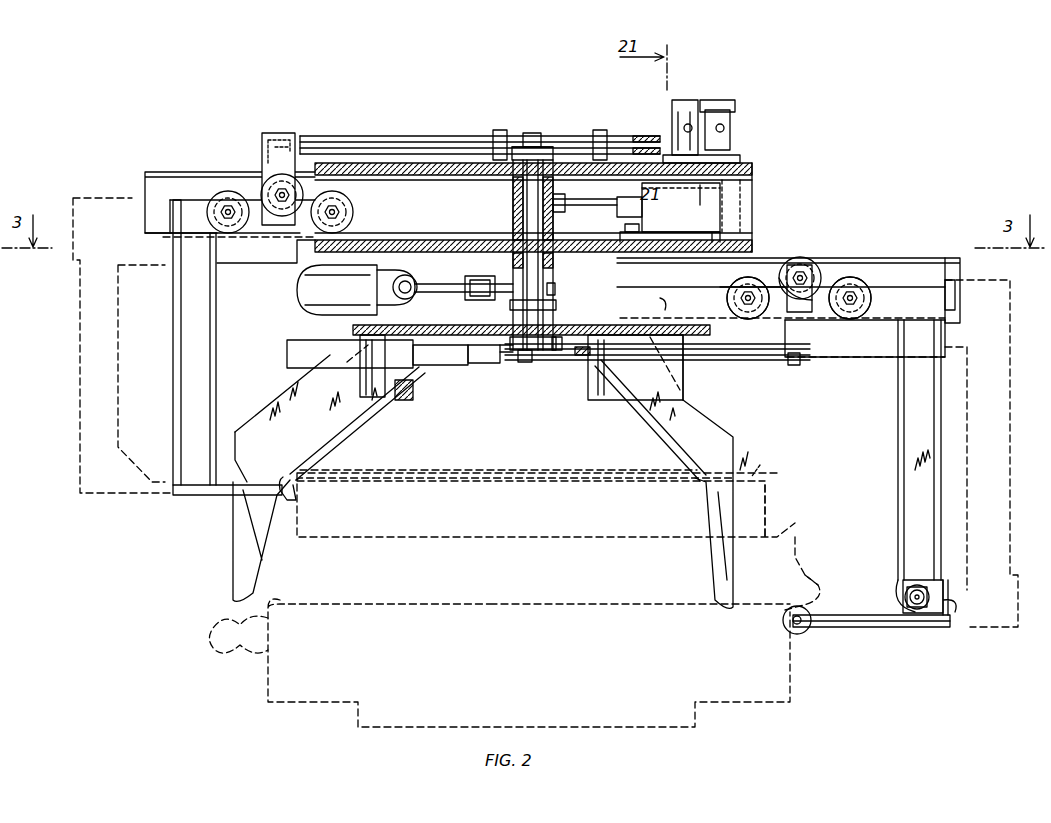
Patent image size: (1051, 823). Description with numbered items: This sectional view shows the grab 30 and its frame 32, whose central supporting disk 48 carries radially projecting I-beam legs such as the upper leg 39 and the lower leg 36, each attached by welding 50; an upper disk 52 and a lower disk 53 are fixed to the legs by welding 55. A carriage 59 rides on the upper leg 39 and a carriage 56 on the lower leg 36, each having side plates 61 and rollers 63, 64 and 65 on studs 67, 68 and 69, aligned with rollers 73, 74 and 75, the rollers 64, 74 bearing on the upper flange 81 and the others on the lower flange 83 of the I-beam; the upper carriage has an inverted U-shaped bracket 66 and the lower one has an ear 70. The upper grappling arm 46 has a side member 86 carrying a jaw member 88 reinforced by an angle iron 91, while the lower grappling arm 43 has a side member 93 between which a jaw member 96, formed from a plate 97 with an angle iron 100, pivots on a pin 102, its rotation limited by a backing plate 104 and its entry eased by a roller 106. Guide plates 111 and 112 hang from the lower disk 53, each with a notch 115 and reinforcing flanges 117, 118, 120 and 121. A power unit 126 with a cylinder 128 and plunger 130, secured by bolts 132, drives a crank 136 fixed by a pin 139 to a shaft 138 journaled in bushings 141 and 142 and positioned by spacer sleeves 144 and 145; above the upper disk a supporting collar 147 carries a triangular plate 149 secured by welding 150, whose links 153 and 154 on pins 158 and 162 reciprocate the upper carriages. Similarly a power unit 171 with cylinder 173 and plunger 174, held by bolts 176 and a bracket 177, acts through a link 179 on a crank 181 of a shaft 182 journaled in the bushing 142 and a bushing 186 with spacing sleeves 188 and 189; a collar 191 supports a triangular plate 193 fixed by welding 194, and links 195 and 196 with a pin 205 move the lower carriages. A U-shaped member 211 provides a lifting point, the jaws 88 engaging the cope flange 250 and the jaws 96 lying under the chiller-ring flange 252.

The grab 30 is at (829, 224).
The frame 32 is at (742, 153).
The leg 36 is at (938, 250).
The leg 39 is at (161, 162).
The grappling arm 43 is at (890, 419).
The grappling arm 46 is at (163, 336).
The central supporting plate or disk 48 is at (755, 238).
The welding 50 is at (300, 264).
The upper disk 52 is at (756, 168).
The lower disk 53 is at (712, 330).
The welding 55 is at (312, 136).
The carriage 56 is at (975, 297).
The carriage 59 is at (158, 222).
The side plate 61 is at (948, 335).
The roller 63 is at (730, 290).
The roller 64 is at (821, 262).
The roller 65 is at (866, 280).
The inverted U-shaped bracket 66 is at (265, 163).
The stud or bolt 67 is at (755, 282).
The stud or bolt 68 is at (800, 262).
The stud or bolt 69 is at (864, 290).
The bracket or ear 70 is at (815, 268).
The roller 73 is at (338, 200).
The roller 74 is at (262, 190).
The roller 75 is at (228, 200).
The upper flange 81 is at (172, 172).
The lower flange 83 is at (158, 235).
The side member 86 is at (176, 390).
The jaw member 88 is at (292, 500).
The angle iron 91 is at (228, 488).
The side member 93 is at (908, 480).
The jaw member 96 is at (888, 630).
The plate 97 is at (858, 627).
The angle iron 100 is at (900, 602).
The pin or shaft 102 is at (925, 612).
The backing plate 104 is at (955, 612).
The roller 106 is at (800, 630).
The guide plate 111 is at (338, 454).
The guide plate 112 is at (676, 460).
The notch 115 is at (293, 480).
The reinforcing flange 117 is at (408, 400).
The reinforcing flange 118 is at (372, 400).
The reinforcing flange 120 is at (686, 382).
The reinforcing flange 121 is at (610, 390).
The power unit 126 is at (706, 196).
The cylinder or housing 128 is at (680, 211).
The plunger 130 is at (588, 206).
The bolts 132 is at (630, 230).
The crank 136 is at (512, 212).
The shaft 138 is at (533, 133).
The pin 139 is at (530, 205).
The bushing 141 is at (556, 160).
The bushing 142 is at (566, 230).
The spacer sleeve 144 is at (512, 187).
The spacer sleeve 145 is at (512, 235).
The supporting collar 147 is at (522, 152).
The triangular-shaped plate 149 is at (546, 158).
The welding 150 is at (518, 145).
The link 153 is at (655, 137).
The link 154 is at (400, 137).
The pin 158 is at (495, 138).
The pin 162 is at (283, 133).
The power unit 171 is at (310, 291).
The cylinder or housing 173 is at (310, 303).
The plunger 174 is at (417, 288).
The bolts 176 is at (621, 457).
The bracket 177 is at (290, 352).
The link 179 is at (494, 268).
The crank 181 is at (556, 290).
The shaft 182 is at (524, 365).
The bushing 186 is at (510, 348).
The spacing sleeve 188 is at (556, 273).
The spacing sleeve 189 is at (556, 307).
The supporting collar 191 is at (548, 355).
The triangular-shaped plate 193 is at (470, 355).
The welding 194 is at (518, 355).
The link 195 is at (440, 362).
The link 196 is at (712, 358).
The pin 205 is at (793, 368).
The U-shaped member 211 is at (716, 108).
The flange 250 is at (782, 478).
The flange 252 is at (822, 552).